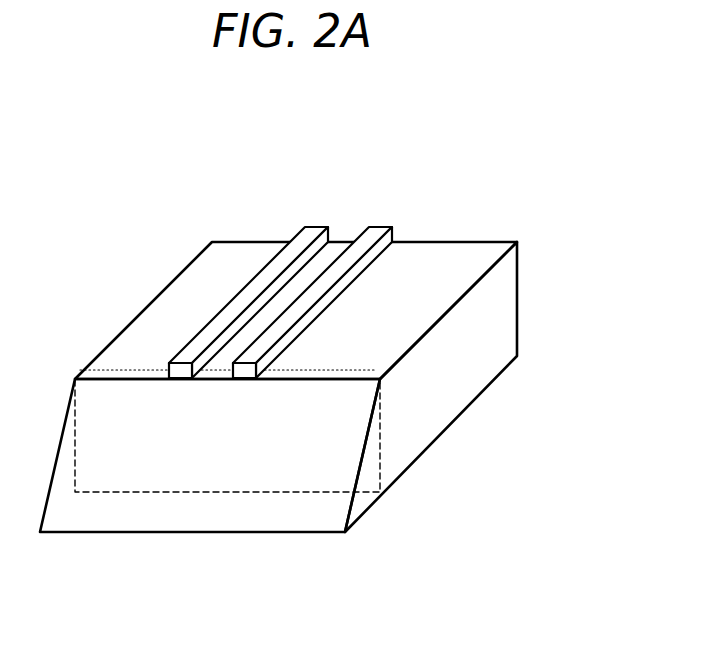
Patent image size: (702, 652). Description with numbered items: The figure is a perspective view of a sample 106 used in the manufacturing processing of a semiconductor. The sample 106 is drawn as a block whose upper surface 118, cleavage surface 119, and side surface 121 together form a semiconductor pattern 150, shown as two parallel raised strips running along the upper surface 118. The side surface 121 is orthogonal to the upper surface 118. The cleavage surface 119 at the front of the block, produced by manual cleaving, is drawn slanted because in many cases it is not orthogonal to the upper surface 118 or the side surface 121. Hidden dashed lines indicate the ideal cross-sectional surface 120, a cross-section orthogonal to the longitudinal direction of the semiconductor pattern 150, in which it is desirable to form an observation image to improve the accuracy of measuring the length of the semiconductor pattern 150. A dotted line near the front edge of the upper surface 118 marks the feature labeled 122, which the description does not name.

The sample 106 is at (300, 354).
The upper surface 118 is at (177, 293).
The cleavage surface 119 is at (165, 507).
The ideal cross-sectional surface 120 is at (278, 402).
The side surface 121 is at (423, 393).
The boundary layer 122 is at (120, 377).
The semiconductor pattern 150 is at (305, 236).